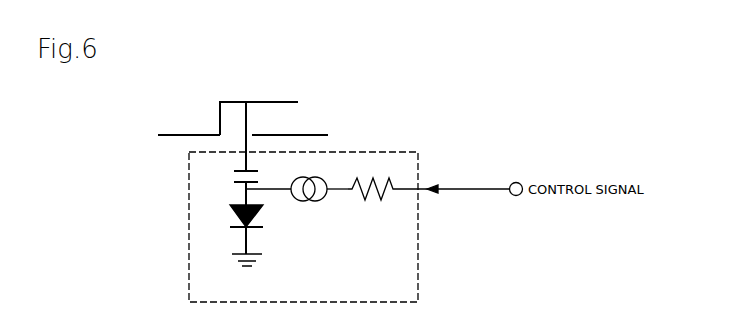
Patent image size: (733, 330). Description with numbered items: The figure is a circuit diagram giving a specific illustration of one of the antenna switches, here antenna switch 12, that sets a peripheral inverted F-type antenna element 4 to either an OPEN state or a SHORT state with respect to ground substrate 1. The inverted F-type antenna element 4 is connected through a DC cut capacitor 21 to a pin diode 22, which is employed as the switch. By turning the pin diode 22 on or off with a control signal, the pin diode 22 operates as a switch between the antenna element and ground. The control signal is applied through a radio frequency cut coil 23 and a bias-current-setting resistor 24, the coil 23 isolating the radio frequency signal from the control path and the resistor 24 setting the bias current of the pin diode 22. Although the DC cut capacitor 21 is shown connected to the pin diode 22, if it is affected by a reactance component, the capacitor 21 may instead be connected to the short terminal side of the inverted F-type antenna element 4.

The ground substrate 1 is at (310, 134).
The inverted F-type antenna element 4 is at (262, 101).
The antenna switch 12 is at (395, 151).
The capacitor 21 is at (232, 176).
The pin diode 22 is at (230, 216).
The coil 23 is at (312, 201).
The resistor 24 is at (378, 201).